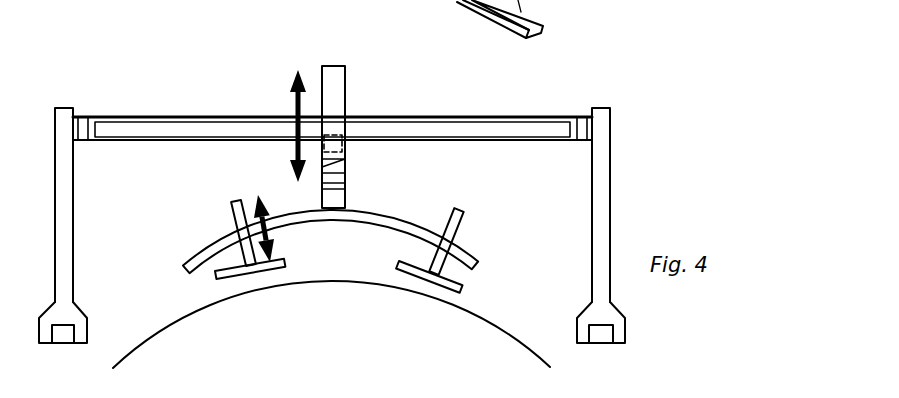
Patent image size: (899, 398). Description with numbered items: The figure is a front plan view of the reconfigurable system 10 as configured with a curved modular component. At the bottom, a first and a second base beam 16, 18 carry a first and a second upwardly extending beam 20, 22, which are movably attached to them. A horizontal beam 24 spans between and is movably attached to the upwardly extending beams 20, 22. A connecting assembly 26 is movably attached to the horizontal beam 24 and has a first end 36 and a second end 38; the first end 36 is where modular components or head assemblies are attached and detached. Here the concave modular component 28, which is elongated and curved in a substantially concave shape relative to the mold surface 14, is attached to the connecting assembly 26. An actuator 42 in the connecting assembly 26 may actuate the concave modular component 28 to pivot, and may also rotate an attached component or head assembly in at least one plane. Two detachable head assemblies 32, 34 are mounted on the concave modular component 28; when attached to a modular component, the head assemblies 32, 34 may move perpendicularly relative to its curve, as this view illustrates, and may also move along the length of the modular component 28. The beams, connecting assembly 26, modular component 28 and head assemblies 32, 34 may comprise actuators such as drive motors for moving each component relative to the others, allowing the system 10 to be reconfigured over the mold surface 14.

The reconfigurable system 10 is at (143, 31).
The mold surface 14 is at (497, 325).
The first base beam 16 is at (62, 338).
The second base beam 18 is at (601, 338).
The first upwardly extending beam 20 is at (57, 215).
The second upwardly extending beam 22 is at (611, 206).
The horizontal beam 24 is at (216, 132).
The connecting assembly 26 is at (336, 101).
The concave modular component 28 is at (398, 222).
The head assembly 32 is at (286, 267).
The head assembly 34 is at (405, 268).
The first end 36 is at (322, 161).
The second end 38 is at (334, 64).
The actuator 42 is at (345, 146).